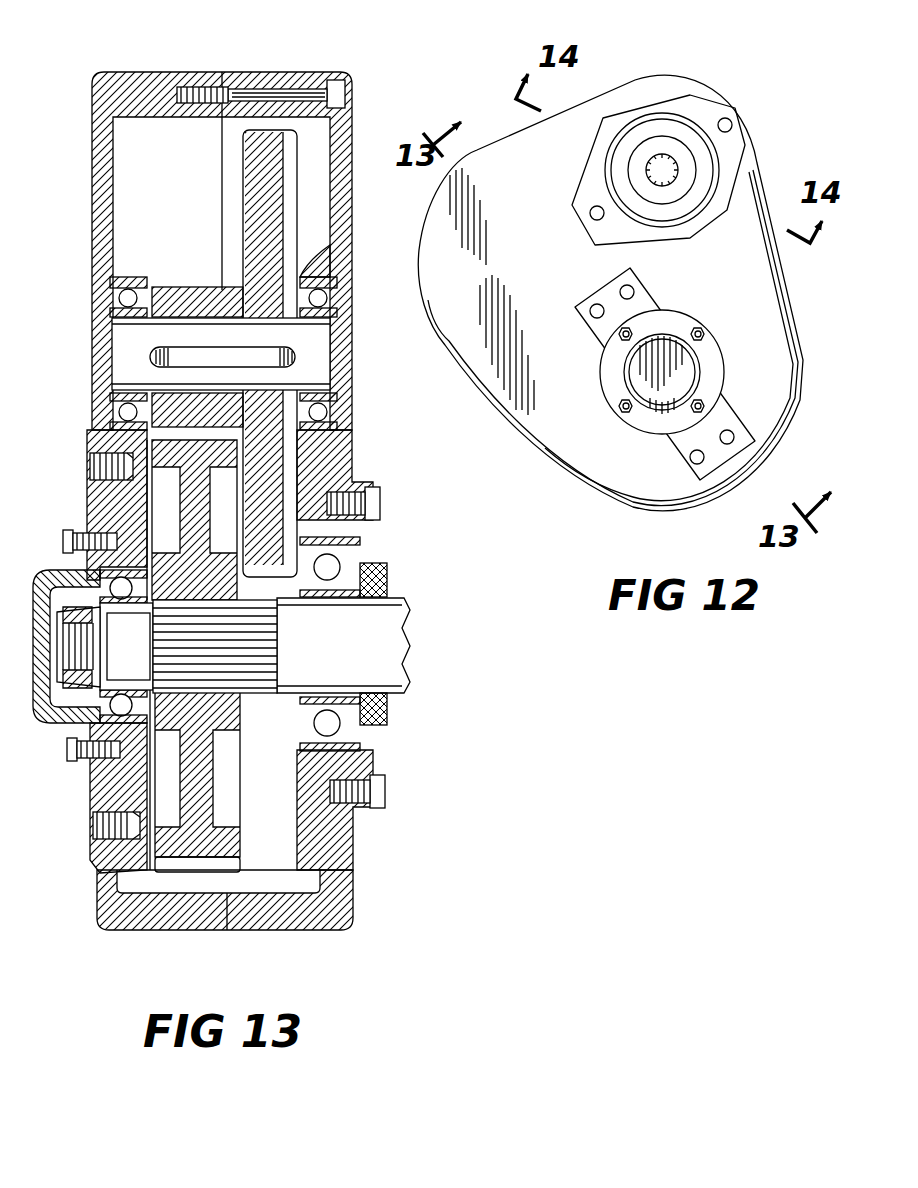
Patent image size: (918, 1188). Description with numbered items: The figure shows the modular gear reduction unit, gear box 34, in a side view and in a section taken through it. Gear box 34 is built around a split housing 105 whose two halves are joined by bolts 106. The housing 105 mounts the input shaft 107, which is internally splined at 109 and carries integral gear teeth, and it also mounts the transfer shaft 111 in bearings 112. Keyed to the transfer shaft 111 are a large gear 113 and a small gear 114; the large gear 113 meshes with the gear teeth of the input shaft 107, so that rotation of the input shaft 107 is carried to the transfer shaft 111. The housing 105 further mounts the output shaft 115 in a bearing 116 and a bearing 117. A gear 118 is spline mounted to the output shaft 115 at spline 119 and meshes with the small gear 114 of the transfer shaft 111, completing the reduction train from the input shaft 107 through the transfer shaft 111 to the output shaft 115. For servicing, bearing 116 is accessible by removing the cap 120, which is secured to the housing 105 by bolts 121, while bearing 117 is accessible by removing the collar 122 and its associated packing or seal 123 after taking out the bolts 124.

In FIG. 13, the gear box 34 is at (236, 62).
In FIG. 12, the gear box 34 is at (758, 113).
In FIG. 13, the split housing 105 is at (140, 72).
In FIG. 12, the split housing 105 is at (508, 276).
In FIG. 13, the bolts 106 is at (346, 92).
In FIG. 12, the input shaft 107 is at (646, 167).
In FIG. 12, the internal spline 109 is at (663, 178).
In FIG. 13, the transfer shaft 111 is at (123, 343).
In FIG. 13, the bearings 112 is at (126, 276).
In FIG. 13, the large gear 113 is at (250, 168).
In FIG. 13, the small gear 114 is at (185, 282).
In FIG. 13, the output shaft 115 is at (397, 640).
In FIG. 13, the bearing 116 is at (98, 589).
In FIG. 13, the bearing 117 is at (356, 558).
In FIG. 13, the gear 118 is at (241, 850).
In FIG. 13, the spline 119 is at (257, 636).
In FIG. 13, the cap 120 is at (48, 712).
In FIG. 12, the cap 120 is at (612, 387).
In FIG. 13, the bolts 121 is at (65, 536).
In FIG. 12, the bolts 121 is at (703, 333).
In FIG. 13, the collar 122 is at (388, 568).
In FIG. 13, the packing or seal 123 is at (386, 696).
In FIG. 13, the bolts 124 is at (381, 501).